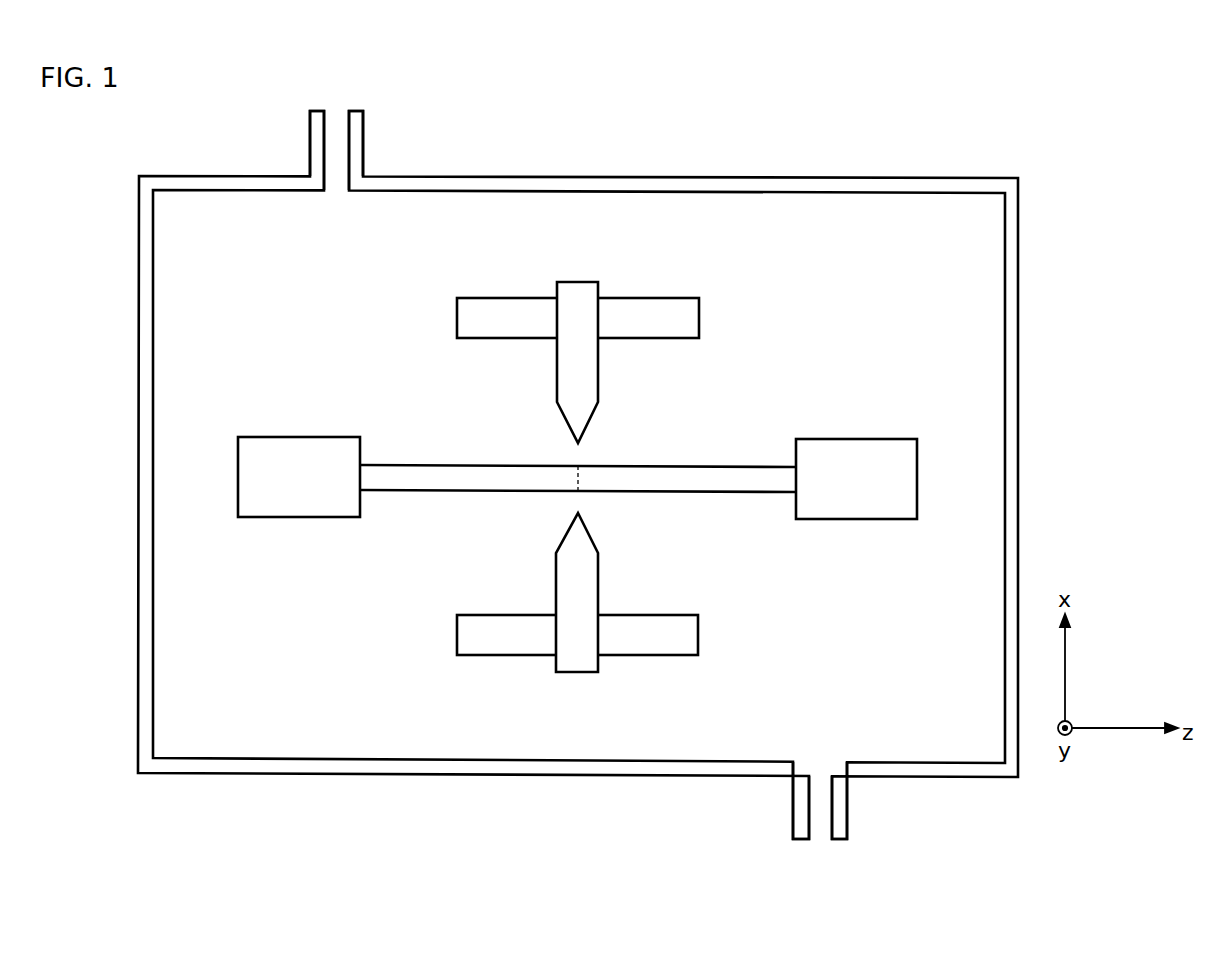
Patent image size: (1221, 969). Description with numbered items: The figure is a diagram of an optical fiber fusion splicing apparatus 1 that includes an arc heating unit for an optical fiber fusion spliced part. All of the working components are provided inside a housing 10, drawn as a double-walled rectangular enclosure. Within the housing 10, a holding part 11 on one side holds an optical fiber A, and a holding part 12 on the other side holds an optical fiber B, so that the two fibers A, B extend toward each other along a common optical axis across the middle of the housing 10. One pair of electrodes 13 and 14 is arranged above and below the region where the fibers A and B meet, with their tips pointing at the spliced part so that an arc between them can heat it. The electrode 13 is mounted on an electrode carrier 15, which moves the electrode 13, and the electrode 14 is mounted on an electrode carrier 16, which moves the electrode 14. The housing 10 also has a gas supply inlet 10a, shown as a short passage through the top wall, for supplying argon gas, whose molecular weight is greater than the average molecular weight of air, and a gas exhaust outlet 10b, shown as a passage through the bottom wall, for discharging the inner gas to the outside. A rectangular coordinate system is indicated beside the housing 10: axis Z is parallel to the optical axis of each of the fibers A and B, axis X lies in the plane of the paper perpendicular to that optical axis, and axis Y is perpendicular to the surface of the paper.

The optical fiber fusion splicing apparatus 1 is at (963, 126).
The housing 10 is at (790, 178).
The gas supply inlet 10a is at (339, 105).
The gas exhaust outlet 10b is at (819, 838).
The holding part 11 is at (296, 437).
The holding part 12 is at (855, 439).
The electrode 13 is at (580, 280).
The electrode 14 is at (578, 675).
The electrode carrier 15 is at (634, 297).
The electrode carrier 16 is at (632, 657).
The optical fiber A is at (461, 465).
The optical fiber B is at (686, 467).